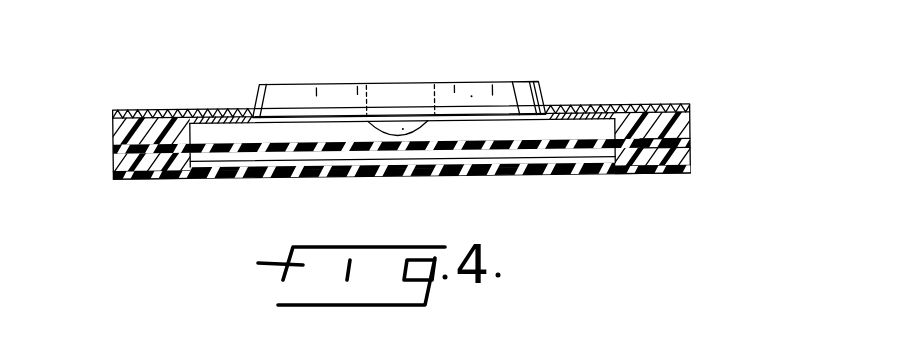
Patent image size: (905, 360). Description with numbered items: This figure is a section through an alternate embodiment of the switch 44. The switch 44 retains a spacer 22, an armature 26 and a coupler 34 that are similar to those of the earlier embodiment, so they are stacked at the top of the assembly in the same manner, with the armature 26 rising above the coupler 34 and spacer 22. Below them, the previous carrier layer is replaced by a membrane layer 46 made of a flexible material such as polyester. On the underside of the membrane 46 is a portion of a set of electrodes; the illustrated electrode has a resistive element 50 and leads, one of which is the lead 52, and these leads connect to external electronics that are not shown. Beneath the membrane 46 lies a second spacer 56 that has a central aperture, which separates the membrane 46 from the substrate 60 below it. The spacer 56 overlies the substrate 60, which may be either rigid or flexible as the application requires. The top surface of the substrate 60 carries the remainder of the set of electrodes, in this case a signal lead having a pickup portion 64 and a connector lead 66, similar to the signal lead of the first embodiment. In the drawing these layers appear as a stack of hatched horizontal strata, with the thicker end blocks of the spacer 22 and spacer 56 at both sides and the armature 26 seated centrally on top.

The spacer 22 is at (125, 132).
The armature 26 is at (488, 76).
The coupler 34 is at (118, 108).
The switch 44 is at (675, 93).
The membrane layer 46 is at (120, 148).
The resistive element 50 is at (230, 158).
The lead 52 is at (690, 147).
The spacer 56 is at (117, 165).
The substrate 60 is at (167, 176).
The pickup portion 64 is at (240, 168).
The connector lead 66 is at (692, 163).